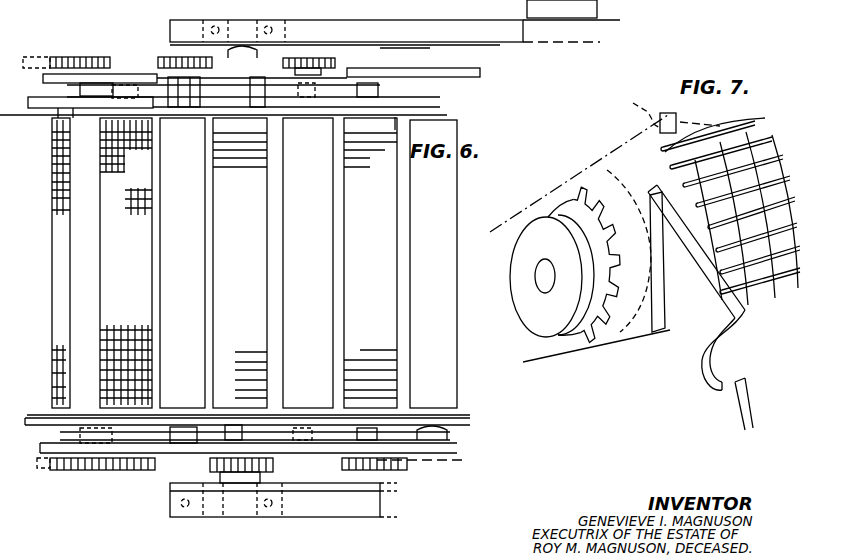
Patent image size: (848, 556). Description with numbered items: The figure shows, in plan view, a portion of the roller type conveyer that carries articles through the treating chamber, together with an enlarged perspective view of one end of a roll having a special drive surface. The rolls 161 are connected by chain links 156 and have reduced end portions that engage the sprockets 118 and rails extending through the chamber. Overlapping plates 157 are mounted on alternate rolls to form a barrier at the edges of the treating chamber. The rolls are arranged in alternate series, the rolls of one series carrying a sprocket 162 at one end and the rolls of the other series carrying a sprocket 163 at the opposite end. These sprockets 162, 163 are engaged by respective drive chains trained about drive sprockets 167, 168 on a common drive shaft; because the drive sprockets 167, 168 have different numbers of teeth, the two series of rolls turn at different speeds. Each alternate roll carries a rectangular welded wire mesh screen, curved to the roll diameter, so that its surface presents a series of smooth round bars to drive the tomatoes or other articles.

In FIG. 6, the idler and drive sprockets 118 is at (285, 92).
In FIG. 7, the idler and drive sprockets 118 is at (700, 375).
In FIG. 6, the chain links 156 is at (427, 458).
In FIG. 7, the chain links 156 is at (622, 183).
In FIG. 7, the overlapping plates 157 is at (598, 136).
In FIG. 6, the rolls 161 is at (378, 304).
In FIG. 7, the rolls 161 is at (705, 278).
In FIG. 6, the sprocket 162 is at (270, 470).
In FIG. 7, the sprocket 162 is at (592, 343).
In FIG. 6, the sprocket 163 is at (160, 57).
In FIG. 6, the drive sprocket 167 is at (41, 470).
In FIG. 6, the drive sprocket 168 is at (33, 57).